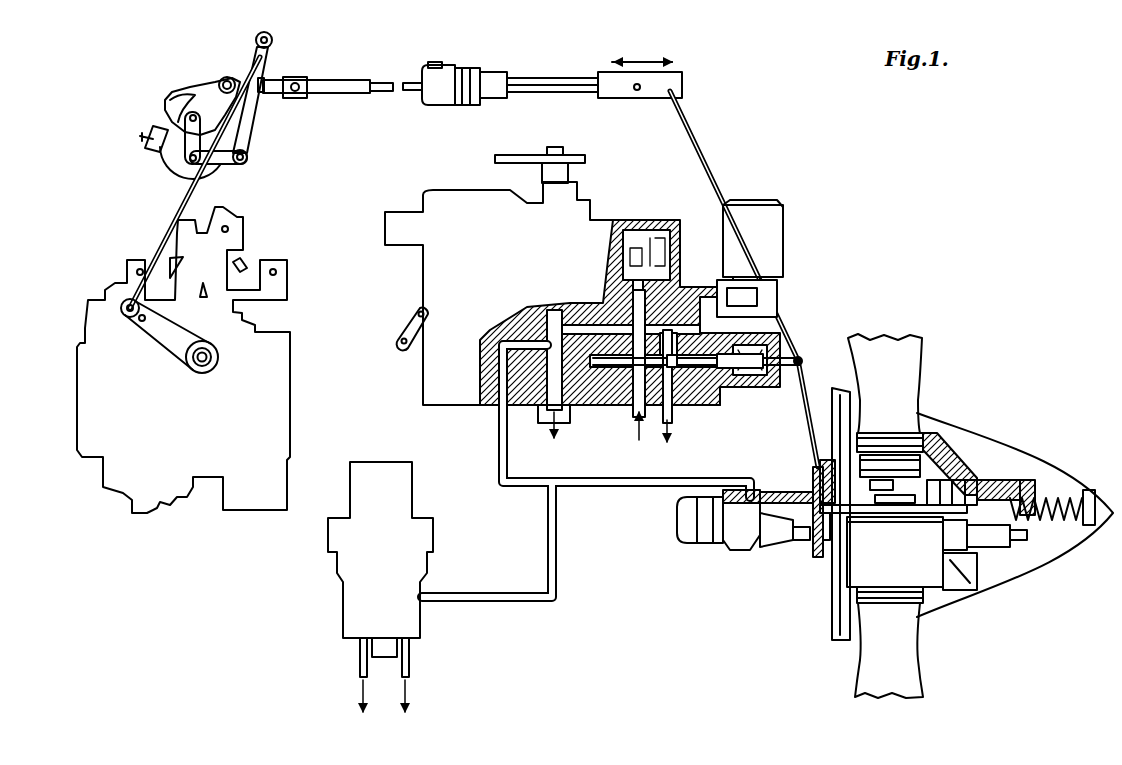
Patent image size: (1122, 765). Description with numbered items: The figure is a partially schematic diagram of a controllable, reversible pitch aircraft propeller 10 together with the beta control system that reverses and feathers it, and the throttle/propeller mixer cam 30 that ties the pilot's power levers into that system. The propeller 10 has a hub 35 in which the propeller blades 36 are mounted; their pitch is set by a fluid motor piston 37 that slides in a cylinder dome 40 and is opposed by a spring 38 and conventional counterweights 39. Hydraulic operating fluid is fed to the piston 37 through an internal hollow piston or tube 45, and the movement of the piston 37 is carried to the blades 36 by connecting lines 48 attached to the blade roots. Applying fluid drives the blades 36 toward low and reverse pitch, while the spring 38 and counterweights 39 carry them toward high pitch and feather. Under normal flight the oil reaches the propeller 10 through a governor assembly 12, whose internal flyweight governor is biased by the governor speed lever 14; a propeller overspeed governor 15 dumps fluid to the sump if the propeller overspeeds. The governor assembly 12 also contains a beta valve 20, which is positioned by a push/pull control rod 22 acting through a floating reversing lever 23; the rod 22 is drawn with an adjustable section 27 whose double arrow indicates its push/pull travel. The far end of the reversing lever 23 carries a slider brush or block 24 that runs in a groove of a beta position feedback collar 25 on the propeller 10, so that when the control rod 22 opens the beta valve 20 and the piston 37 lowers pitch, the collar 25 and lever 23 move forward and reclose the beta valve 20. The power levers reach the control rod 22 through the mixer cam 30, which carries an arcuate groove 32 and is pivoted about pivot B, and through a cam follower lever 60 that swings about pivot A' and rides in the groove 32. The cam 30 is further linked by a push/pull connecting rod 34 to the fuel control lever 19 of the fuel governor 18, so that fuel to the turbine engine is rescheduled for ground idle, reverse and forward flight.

The controllable, reversible pitch aircraft propeller 10 is at (950, 494).
The governor assembly 12 is at (420, 268).
The governor speed lever 14 is at (522, 157).
The propeller overspeed governor 15 is at (385, 462).
The fuel governor 18 is at (284, 392).
The fuel control lever 19 is at (176, 346).
The beta valve 20 is at (800, 354).
The push/pull control rod 22 is at (325, 80).
The floating reversing lever 23 is at (712, 162).
The slider brush or block 24 is at (812, 480).
The beta position feedback collar 25 is at (815, 558).
The adjustable rod 27 is at (636, 62).
The throttle/propeller mixer cam 30 is at (160, 94).
The arcuate groove 32 is at (218, 118).
The push/pull connecting rod 34 is at (180, 198).
The hub 35 is at (843, 572).
The propeller blades 36 is at (887, 338).
The fluid motor piston 37 is at (1002, 492).
The spring 38 is at (1058, 522).
The counterweights 39 is at (985, 480).
The cylinder dome 40 is at (1005, 552).
The internal hollow piston or tube 45 is at (958, 495).
The connecting lines 48 is at (895, 506).
The cam follower lever 60 is at (165, 150).
The pivot A' is at (163, 154).
The pivot B is at (250, 158).